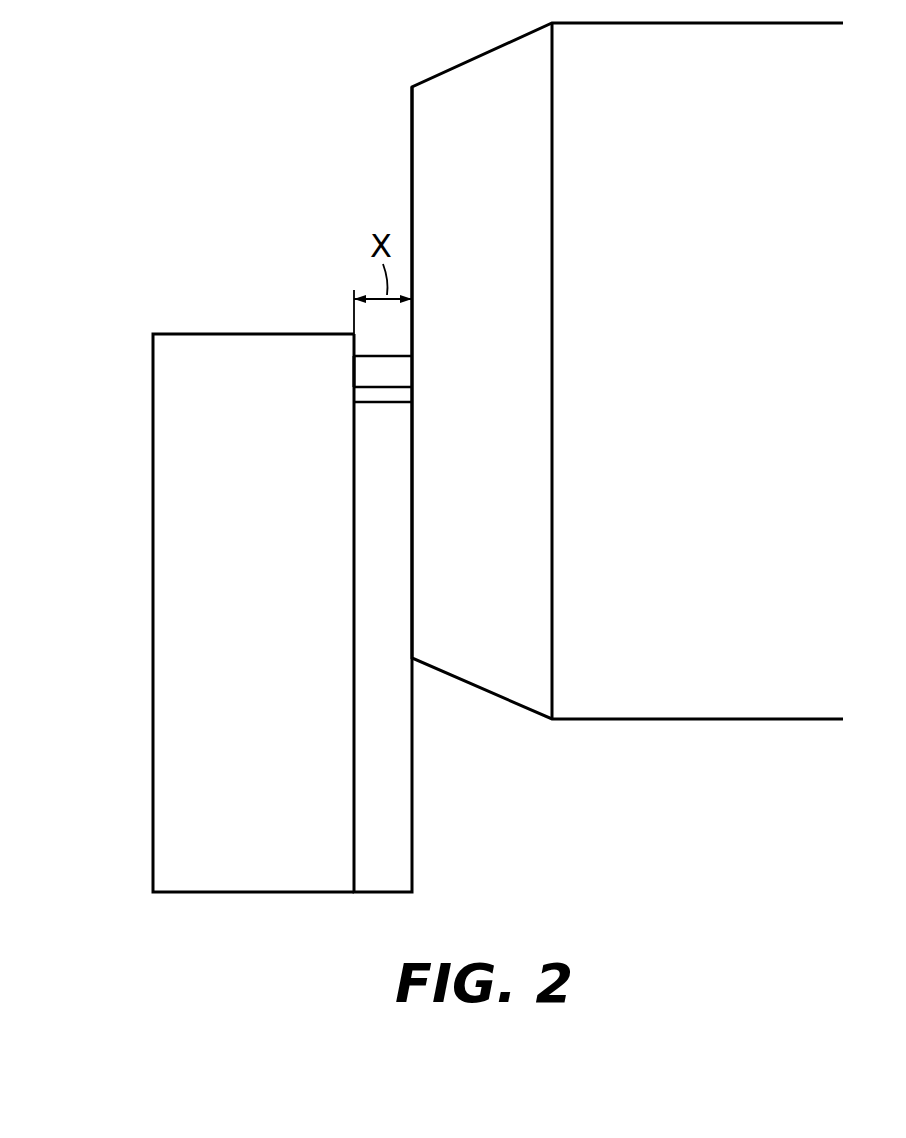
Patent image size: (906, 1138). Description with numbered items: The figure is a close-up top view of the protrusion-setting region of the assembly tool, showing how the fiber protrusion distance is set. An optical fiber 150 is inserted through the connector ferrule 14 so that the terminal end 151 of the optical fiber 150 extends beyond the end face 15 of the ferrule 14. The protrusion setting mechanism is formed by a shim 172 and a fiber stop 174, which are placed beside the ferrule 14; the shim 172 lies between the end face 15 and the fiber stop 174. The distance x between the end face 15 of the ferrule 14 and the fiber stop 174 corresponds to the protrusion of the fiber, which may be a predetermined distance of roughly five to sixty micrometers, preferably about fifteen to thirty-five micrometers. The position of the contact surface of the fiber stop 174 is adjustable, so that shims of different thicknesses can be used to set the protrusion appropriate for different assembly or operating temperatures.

The connector ferrule 14 is at (683, 706).
The end face 15 is at (412, 166).
The optical fiber 150 is at (378, 375).
The terminal end 151 is at (353, 373).
The shim 172 is at (392, 825).
The fiber stop 174 is at (170, 629).